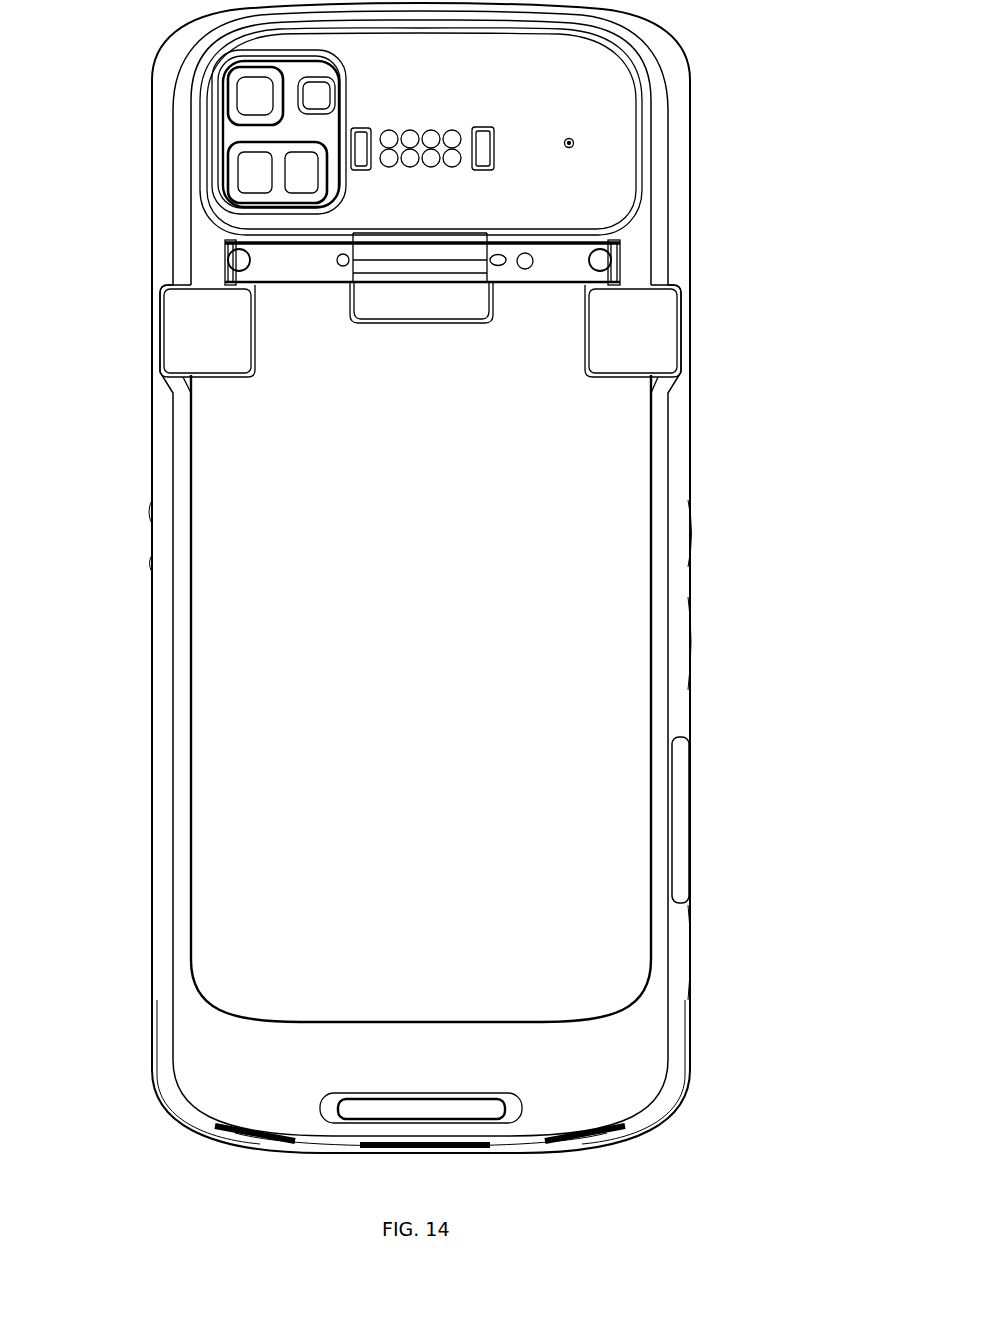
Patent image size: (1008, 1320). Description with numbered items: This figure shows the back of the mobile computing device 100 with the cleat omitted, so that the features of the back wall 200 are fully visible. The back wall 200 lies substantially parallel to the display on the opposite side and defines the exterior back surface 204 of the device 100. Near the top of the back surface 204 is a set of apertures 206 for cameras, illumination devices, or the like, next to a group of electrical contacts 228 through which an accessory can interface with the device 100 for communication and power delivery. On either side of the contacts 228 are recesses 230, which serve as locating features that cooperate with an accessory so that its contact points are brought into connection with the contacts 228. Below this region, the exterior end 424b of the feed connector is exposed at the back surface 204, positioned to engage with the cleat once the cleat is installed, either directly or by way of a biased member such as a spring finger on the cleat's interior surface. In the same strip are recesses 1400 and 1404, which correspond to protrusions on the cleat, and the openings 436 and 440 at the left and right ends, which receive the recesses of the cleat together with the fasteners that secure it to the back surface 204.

The mobile computing device 100 is at (798, 56).
The back wall 200 is at (193, 1027).
The exterior back surface 204 is at (192, 230).
The set of apertures 206 is at (227, 123).
The electrical contacts 228 is at (414, 128).
The recesses 230 is at (358, 127).
The opening 436 is at (233, 262).
The opening 440 is at (597, 262).
The recess 1400 is at (342, 266).
The recess 1404 is at (498, 267).
The exterior end of the feed connector 424b is at (525, 270).